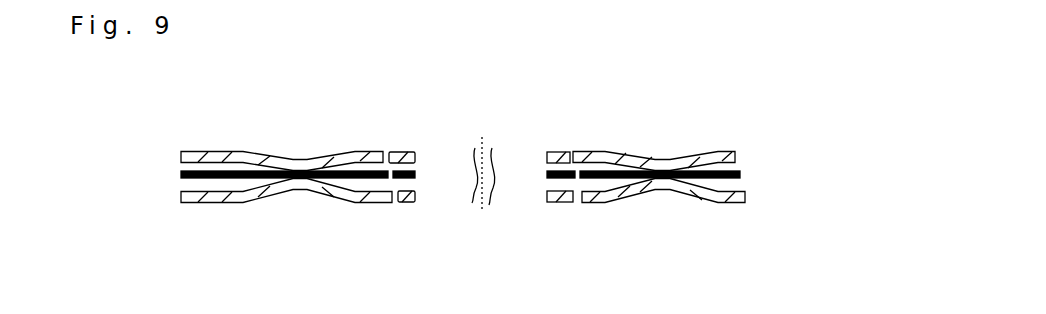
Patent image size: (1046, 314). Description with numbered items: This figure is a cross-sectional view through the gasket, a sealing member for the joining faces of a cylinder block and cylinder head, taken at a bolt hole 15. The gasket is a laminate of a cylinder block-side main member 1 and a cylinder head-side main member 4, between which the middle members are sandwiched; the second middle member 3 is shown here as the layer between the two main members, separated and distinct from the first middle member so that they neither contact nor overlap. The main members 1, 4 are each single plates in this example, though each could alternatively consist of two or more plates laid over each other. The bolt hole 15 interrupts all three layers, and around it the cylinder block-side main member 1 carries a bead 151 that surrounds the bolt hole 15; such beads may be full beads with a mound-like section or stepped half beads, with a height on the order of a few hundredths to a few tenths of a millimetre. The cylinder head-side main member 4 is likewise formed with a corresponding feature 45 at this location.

The cylinder block-side main member 1 is at (180, 200).
The second middle member 3 is at (180, 174).
The cylinder head-side main member 4 is at (180, 162).
The bolt hole 15 is at (450, 148).
The slit in cover layer 45 is at (378, 149).
The bead surrounding bolt hole 151 is at (385, 205).